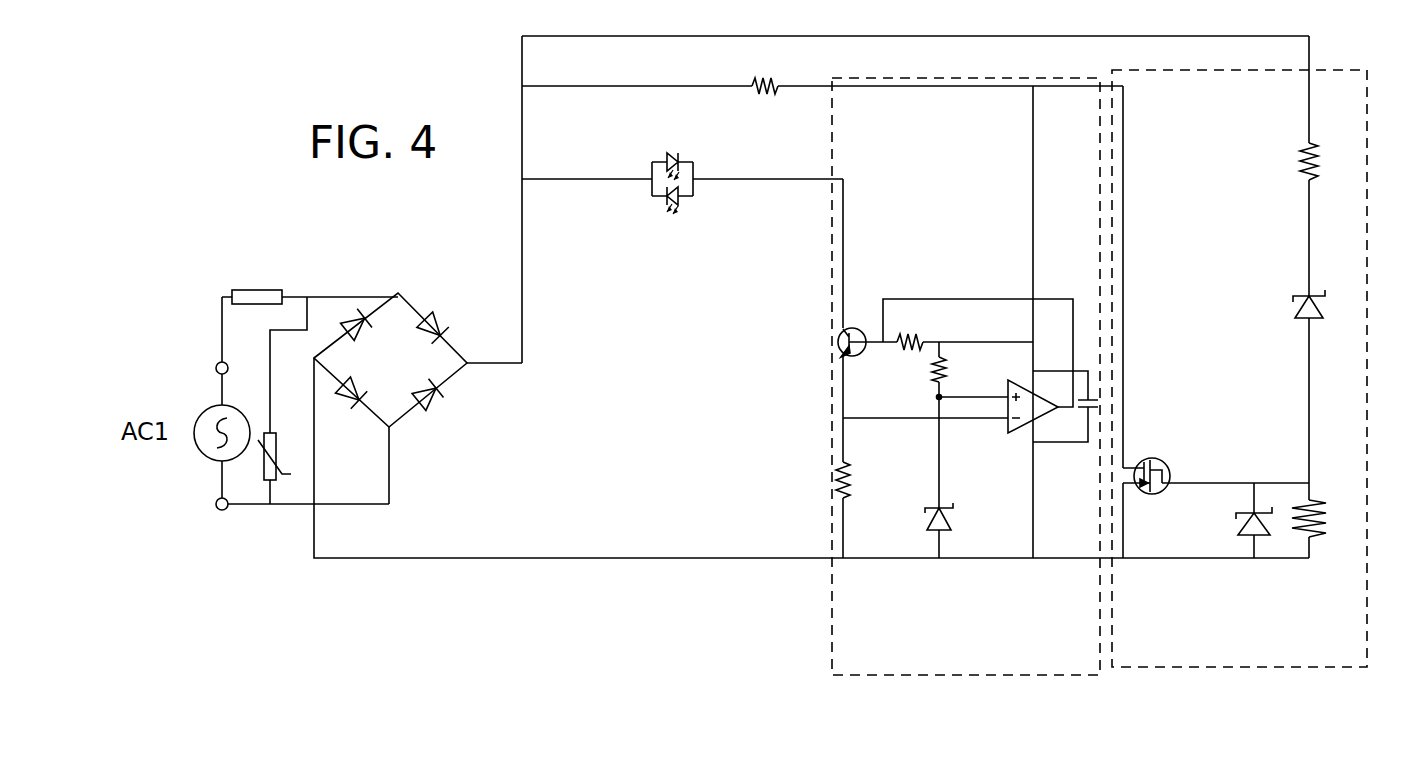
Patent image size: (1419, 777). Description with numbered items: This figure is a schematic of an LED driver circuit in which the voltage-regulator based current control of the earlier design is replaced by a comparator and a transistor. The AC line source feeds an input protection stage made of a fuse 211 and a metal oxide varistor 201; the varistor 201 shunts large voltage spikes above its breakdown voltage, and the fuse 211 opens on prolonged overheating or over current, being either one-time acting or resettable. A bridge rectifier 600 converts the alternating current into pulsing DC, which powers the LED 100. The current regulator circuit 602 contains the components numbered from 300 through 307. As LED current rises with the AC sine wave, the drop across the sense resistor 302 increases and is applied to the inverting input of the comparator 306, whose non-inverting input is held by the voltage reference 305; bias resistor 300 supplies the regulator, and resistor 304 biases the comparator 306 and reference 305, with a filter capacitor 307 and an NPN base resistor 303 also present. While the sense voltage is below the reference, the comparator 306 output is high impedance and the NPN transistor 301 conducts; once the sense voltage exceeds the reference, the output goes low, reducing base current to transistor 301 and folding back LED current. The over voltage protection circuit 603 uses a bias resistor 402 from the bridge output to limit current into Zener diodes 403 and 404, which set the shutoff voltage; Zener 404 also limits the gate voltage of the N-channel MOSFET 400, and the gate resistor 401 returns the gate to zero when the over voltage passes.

The LED 100 is at (683, 217).
The metal oxide varistor 201 is at (263, 460).
The fuse 211 is at (268, 292).
The bias resistor 300 is at (768, 80).
The NPN transistor 301 is at (834, 337).
The sense resistor 302 is at (836, 470).
The NPN base resistor 303 is at (916, 333).
The voltage reference bias resistor 304 is at (934, 372).
The voltage reference 305 is at (943, 508).
The comparator 306 is at (1036, 393).
The filter capacitor 307 is at (1095, 407).
The N-channel MOSFET 400 is at (1172, 468).
The gate resistor 401 is at (1330, 518).
The bias resistor for OVP circuit 402 is at (1300, 162).
The OVP reference Zener diode 403 is at (1295, 313).
The gate voltage limiting Zener diode 404 is at (1238, 528).
The bridge rectifier 600 is at (445, 423).
The current regulator circuit 602 is at (920, 675).
The over voltage protection circuit 603 is at (1173, 667).